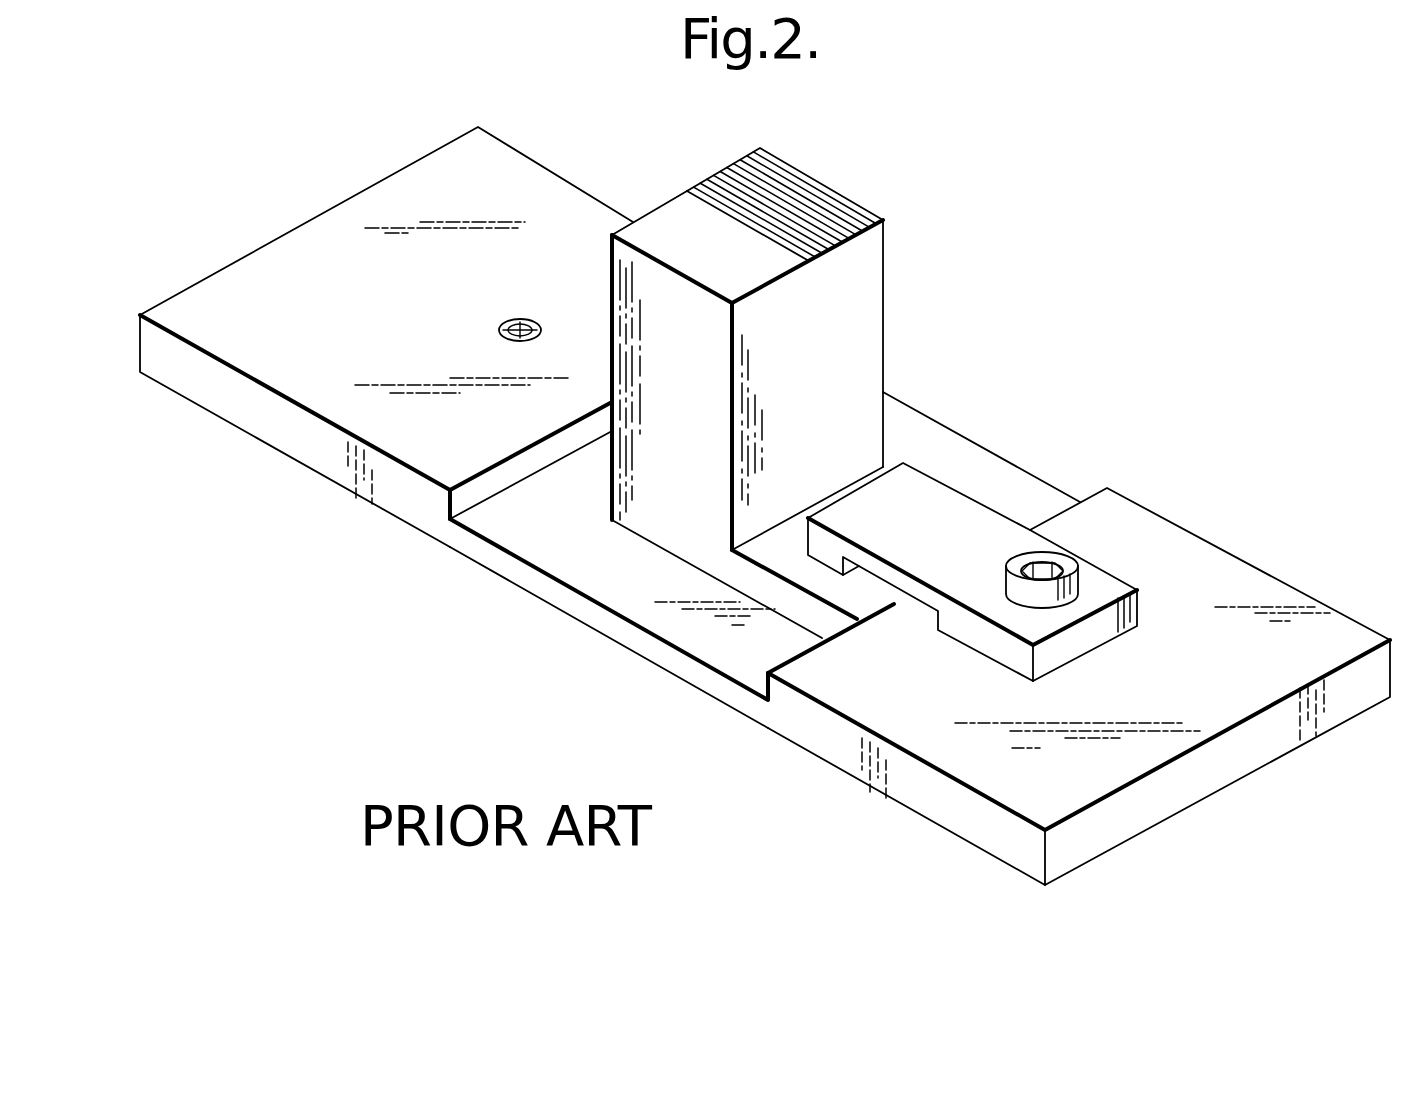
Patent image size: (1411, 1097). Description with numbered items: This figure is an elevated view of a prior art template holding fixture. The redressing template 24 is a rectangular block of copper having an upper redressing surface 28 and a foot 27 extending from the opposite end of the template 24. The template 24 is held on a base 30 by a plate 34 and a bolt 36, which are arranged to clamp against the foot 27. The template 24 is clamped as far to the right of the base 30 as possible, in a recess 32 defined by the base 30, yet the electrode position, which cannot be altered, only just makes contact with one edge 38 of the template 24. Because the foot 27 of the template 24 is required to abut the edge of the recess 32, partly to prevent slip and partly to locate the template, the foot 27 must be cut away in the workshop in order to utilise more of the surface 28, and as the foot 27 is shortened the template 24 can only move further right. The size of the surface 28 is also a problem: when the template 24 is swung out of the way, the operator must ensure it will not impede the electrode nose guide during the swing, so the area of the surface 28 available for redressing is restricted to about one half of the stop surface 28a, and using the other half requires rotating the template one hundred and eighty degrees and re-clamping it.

The redressing template 24 is at (813, 342).
The foot 27 is at (800, 609).
The redressing surface 28 is at (677, 228).
The stop surface 28a is at (805, 198).
The base 30 is at (1268, 590).
The recess 32 is at (512, 559).
The plate 34 is at (975, 627).
The bolt 36 is at (1068, 566).
The edge 38 is at (812, 283).